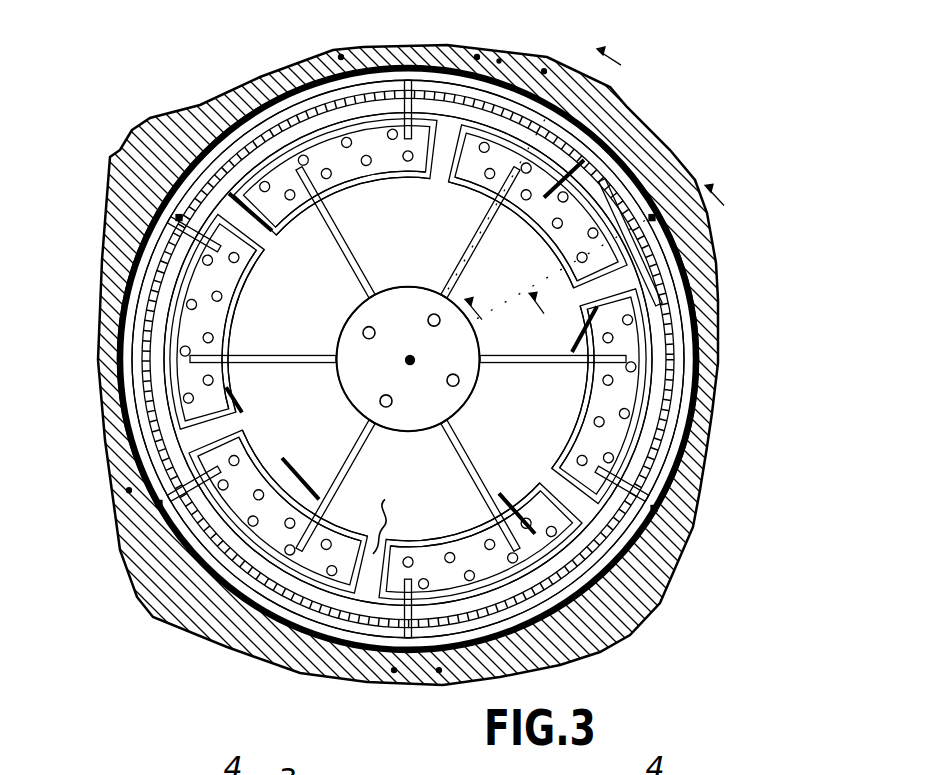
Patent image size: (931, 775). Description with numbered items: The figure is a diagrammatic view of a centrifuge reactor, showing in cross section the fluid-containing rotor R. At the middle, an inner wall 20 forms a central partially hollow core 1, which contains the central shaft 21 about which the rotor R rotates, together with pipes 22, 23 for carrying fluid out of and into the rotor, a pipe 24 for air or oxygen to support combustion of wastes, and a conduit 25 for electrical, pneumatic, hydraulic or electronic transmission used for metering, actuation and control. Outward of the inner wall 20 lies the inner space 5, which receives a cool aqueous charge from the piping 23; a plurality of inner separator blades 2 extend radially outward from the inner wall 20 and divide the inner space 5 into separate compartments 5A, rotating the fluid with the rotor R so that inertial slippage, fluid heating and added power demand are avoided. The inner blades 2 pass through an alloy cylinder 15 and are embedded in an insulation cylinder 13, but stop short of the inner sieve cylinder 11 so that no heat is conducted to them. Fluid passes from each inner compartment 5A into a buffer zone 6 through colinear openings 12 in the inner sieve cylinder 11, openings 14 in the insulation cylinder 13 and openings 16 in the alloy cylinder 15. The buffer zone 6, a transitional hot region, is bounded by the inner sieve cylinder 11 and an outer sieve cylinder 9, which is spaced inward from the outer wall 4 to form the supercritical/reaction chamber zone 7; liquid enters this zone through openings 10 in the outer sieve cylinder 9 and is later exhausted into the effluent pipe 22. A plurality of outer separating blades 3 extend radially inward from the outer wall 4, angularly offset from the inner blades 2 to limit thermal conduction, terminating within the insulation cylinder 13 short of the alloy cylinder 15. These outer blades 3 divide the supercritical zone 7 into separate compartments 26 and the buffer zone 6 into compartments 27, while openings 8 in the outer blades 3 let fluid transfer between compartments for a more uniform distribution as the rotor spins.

The central partially hollow core 1 is at (383, 332).
The inner separator blades 2 is at (340, 232).
The outer separating blades 3 is at (440, 60).
The outer wall 4 is at (98, 578).
The inner space 5 is at (480, 306).
The inner space compartments 5A is at (400, 226).
The buffer zone 6 is at (690, 358).
The supercritical/reaction chamber zone 7 is at (697, 400).
The openings in outer blades 8 is at (408, 70).
The outer sieve cylinder 9 is at (148, 380).
The openings in outer sieve cylinder 10 is at (335, 62).
The inner sieve cylinder 11 is at (135, 405).
The openings in inner sieve cylinder 12 is at (175, 160).
The insulation cylinder 13 is at (165, 330).
The openings in insulation cylinder 14 is at (205, 80).
The alloy cylinder 15 is at (352, 188).
The openings in alloy cylinder 16 is at (278, 232).
The inner wall 20 is at (482, 380).
The central shaft 21 is at (415, 357).
The effluent pipe 22 is at (435, 312).
The pipe 23 is at (457, 384).
The pipe 24 is at (381, 399).
The conduit 25 is at (364, 331).
The supercritical zone compartments 26 is at (342, 58).
The buffer zone compartments 27 is at (140, 357).
The rotor R is at (500, 62).